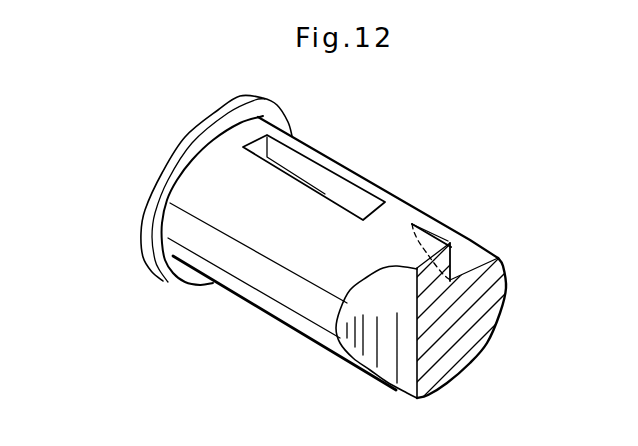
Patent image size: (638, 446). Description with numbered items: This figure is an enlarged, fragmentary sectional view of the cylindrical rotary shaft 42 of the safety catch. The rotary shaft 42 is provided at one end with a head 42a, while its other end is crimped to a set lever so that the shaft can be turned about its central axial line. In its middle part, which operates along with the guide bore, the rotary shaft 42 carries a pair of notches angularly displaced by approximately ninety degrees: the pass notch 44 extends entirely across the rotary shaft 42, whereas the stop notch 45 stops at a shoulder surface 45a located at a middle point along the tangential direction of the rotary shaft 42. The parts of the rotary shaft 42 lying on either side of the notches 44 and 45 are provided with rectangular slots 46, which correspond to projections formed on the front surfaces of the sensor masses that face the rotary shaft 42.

The rotary shaft 42 is at (240, 301).
The head 42a is at (177, 146).
The pass notch 44 is at (372, 355).
The stop notch 45 is at (477, 261).
The shoulder surface 45a is at (454, 274).
The rectangular slot 46 is at (325, 195).